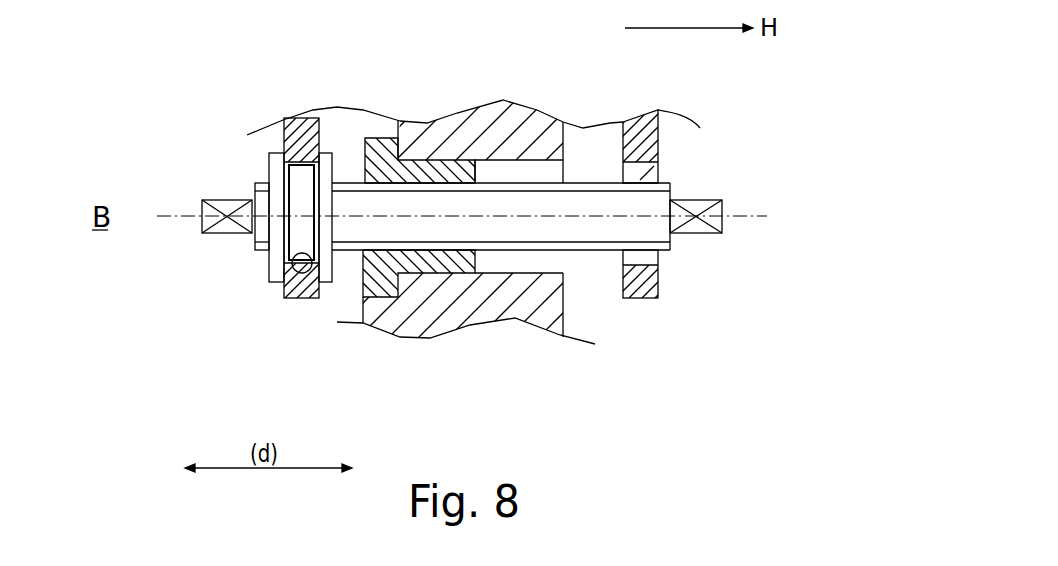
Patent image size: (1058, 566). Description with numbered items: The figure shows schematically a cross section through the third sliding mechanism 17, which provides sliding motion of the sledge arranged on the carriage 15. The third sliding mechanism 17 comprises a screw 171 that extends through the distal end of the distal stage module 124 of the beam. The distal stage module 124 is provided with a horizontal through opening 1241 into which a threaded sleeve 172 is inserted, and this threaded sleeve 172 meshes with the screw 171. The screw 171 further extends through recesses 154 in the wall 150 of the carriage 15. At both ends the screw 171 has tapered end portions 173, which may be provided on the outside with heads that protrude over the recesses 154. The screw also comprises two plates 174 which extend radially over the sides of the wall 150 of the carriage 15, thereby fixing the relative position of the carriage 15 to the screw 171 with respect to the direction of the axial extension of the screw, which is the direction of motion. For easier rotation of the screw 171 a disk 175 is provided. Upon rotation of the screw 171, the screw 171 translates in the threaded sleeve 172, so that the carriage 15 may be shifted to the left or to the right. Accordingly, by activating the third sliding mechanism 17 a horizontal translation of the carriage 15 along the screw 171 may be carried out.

The third sliding mechanism 17 is at (240, 91).
The screw 171 is at (255, 236).
The threaded sleeve 172 is at (377, 137).
The tapered end portions 173 is at (228, 205).
The plates 174 is at (323, 168).
The disk 175 is at (305, 245).
The distal stage module 124 is at (512, 125).
The horizontal through opening 1241 is at (510, 260).
The carriage 15 is at (640, 117).
The wall 150 is at (660, 128).
The recesses 154 is at (658, 165).